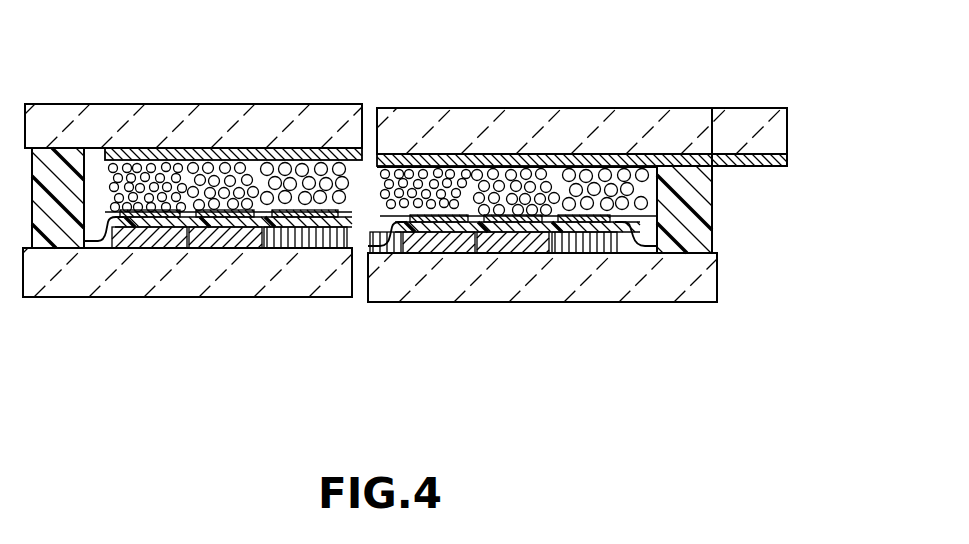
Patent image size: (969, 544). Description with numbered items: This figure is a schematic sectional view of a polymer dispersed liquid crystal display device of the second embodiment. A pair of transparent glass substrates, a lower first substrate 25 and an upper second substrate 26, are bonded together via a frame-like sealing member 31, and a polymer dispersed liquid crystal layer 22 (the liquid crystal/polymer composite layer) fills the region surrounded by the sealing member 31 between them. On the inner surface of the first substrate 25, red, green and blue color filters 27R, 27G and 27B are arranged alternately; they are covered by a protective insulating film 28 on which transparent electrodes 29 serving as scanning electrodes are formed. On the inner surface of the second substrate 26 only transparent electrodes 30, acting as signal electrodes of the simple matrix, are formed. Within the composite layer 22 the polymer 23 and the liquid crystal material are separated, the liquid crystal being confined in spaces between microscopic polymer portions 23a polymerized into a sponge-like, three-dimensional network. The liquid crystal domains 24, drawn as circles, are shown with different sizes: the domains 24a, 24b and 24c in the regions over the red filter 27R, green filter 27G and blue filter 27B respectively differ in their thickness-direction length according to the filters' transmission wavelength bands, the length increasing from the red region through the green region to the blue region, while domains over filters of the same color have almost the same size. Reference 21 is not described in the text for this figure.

The front glass substrate 21 is at (72, 104).
The polymer dispersed liquid crystal layer 22 is at (336, 158).
The polymer 23 is at (644, 185).
The microscopic polymer portions 23a is at (437, 162).
The liquid crystal domains 24 is at (381, 114).
The liquid crystal domains 24a is at (168, 175).
The liquid crystal domains 24b is at (218, 190).
The liquid crystal domains 24c is at (448, 137).
The first substrate 25 is at (669, 290).
The second substrate 26 is at (733, 132).
The red filter 27R is at (130, 247).
The green filter 27G is at (225, 247).
The blue filter 27B is at (305, 247).
The protective insulating film 28 is at (389, 238).
The transparent electrodes 29 is at (165, 218).
The transparent electrodes 30 is at (437, 165).
The sealing member 31 is at (703, 230).